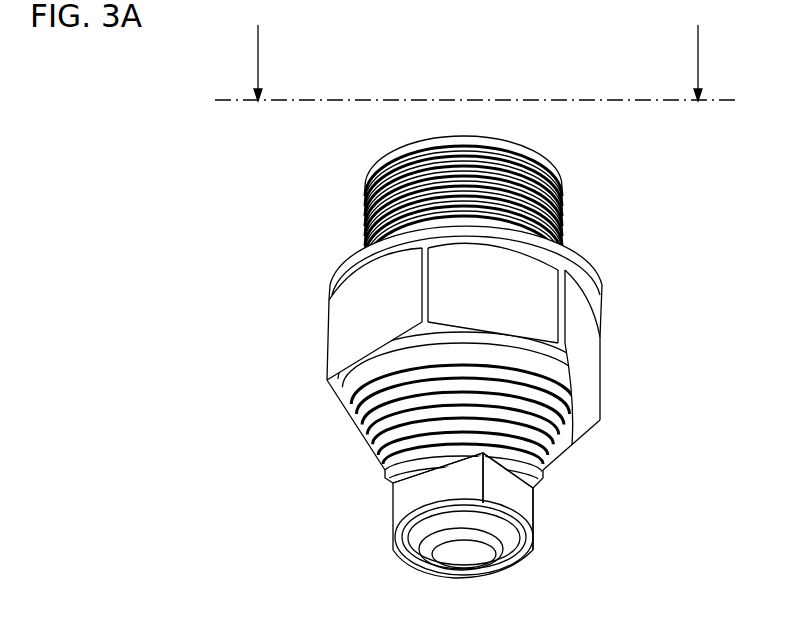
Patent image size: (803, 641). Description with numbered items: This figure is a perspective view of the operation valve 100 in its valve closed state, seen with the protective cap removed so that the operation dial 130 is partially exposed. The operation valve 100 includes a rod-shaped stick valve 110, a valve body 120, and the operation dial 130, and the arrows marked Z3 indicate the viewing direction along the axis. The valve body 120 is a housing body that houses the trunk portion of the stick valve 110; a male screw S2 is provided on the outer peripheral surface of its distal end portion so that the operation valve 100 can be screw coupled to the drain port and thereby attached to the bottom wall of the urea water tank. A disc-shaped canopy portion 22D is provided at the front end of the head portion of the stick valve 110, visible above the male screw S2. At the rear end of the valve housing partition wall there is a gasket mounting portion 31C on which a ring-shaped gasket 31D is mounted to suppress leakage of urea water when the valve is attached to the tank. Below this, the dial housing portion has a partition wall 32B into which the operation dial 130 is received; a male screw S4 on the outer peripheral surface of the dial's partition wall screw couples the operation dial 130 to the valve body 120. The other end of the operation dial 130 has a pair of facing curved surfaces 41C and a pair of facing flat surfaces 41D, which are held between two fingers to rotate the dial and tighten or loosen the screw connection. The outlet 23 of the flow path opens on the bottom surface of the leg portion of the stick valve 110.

The operation valve 100 is at (452, 372).
The canopy portion 22D is at (432, 141).
The male screw S2 is at (372, 193).
The gasket 31D is at (563, 232).
The gasket mounting portion 31C is at (335, 270).
The valve body 120 is at (343, 332).
The partition wall 32B is at (548, 383).
The male screw S4 is at (530, 448).
The curved surfaces 41C is at (417, 487).
The flat surfaces 41D is at (515, 495).
The operation dial 130 is at (412, 495).
The stick valve 110 is at (477, 537).
The outlet 23 is at (462, 562).
The axial direction Z3 is at (477, 63).